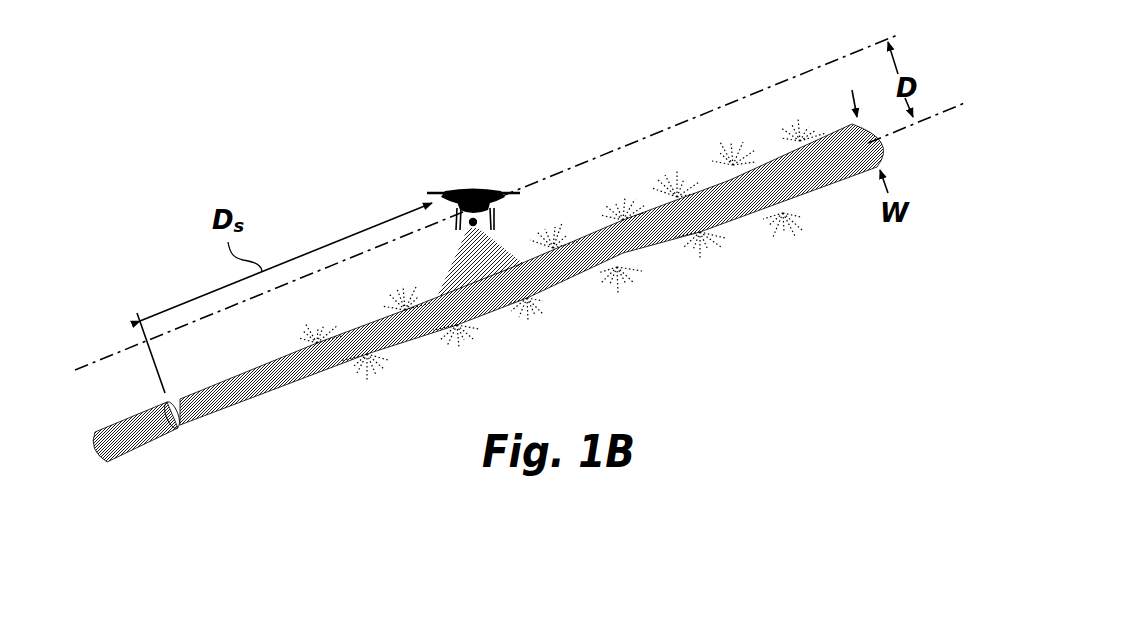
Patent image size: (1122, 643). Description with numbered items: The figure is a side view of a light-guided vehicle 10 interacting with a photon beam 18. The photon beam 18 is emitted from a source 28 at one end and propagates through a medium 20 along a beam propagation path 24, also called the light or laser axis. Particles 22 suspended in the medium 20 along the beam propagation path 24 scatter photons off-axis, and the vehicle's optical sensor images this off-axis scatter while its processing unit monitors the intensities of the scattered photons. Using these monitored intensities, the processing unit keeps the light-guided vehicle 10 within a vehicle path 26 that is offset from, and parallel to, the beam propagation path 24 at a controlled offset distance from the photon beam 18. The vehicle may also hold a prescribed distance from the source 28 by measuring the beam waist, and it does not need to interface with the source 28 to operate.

The light-guided vehicle 10 is at (472, 192).
The photon beam 18 is at (847, 175).
The medium 20 is at (817, 347).
The particles 22 is at (700, 232).
The beam propagation path 24 is at (960, 105).
The vehicle path 26 is at (692, 117).
The source 28 is at (142, 443).